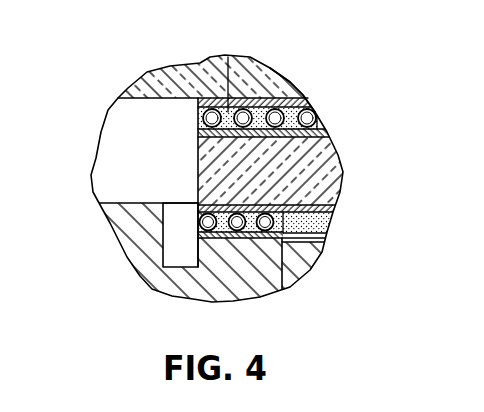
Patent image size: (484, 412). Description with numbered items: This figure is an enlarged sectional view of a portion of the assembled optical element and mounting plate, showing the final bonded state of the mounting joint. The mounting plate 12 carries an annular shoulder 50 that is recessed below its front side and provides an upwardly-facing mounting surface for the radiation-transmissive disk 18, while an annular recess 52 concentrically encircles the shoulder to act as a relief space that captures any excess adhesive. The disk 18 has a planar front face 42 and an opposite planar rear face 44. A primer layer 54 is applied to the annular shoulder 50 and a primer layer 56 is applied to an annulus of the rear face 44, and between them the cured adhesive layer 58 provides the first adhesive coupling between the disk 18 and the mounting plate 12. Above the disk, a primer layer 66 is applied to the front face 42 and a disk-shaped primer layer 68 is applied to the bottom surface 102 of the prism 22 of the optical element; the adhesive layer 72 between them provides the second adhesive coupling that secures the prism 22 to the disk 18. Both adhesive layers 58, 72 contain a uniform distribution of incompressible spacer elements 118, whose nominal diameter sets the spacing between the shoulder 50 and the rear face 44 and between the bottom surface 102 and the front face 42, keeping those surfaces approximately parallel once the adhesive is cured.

The mounting plate 12 is at (110, 222).
The radiation-transmissive disk 18 is at (338, 179).
The prism 22 is at (168, 67).
The front face 42 is at (329, 132).
The rear face 44 is at (333, 208).
The annular shoulder 50 is at (238, 245).
The annular recess 52 is at (180, 245).
The primer layer 54 is at (302, 242).
The primer layer 56 is at (200, 198).
The adhesive layer 58 is at (327, 223).
The primer layer 66 is at (198, 131).
The primer layer 68 is at (300, 90).
The adhesive layer 72 is at (229, 60).
The bottom surface 102 is at (142, 101).
The spacer elements 118 is at (324, 111).